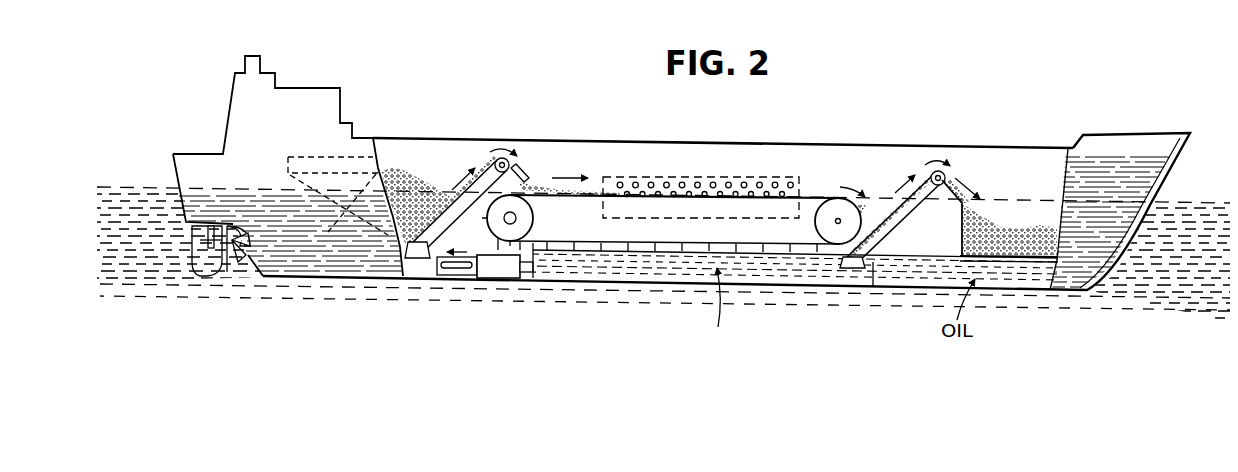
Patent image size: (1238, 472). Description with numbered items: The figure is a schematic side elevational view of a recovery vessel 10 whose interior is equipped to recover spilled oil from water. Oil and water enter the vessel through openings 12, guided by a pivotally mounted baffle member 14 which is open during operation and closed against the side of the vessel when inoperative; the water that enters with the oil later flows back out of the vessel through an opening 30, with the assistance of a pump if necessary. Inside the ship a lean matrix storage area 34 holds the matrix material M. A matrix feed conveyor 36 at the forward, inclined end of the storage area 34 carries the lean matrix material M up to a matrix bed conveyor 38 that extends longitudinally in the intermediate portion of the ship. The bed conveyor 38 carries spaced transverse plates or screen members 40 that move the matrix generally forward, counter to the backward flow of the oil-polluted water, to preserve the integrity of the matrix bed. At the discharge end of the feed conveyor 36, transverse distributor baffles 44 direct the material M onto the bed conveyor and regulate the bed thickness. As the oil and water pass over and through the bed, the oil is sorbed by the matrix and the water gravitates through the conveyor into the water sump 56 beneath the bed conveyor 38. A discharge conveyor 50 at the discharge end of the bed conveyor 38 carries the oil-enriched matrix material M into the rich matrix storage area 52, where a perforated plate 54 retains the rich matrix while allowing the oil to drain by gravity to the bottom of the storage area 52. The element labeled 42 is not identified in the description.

The recovery vessel 10 is at (846, 139).
The openings 12 is at (651, 178).
The baffle member 14 is at (720, 177).
The opening 30 is at (453, 273).
The lean matrix storage area 34 is at (357, 204).
The matrix feed conveyor 36 is at (485, 162).
The matrix bed conveyor 38 is at (637, 232).
The transverse plates 40 is at (585, 197).
The belt drum 42 is at (680, 243).
The transverse distributor baffles 44 is at (528, 170).
The discharge conveyor 50 is at (913, 212).
The rich matrix storage area 52 is at (1037, 223).
The perforated plate 54 is at (1022, 261).
The water sump 56 is at (807, 275).
The matrix material M is at (425, 182).